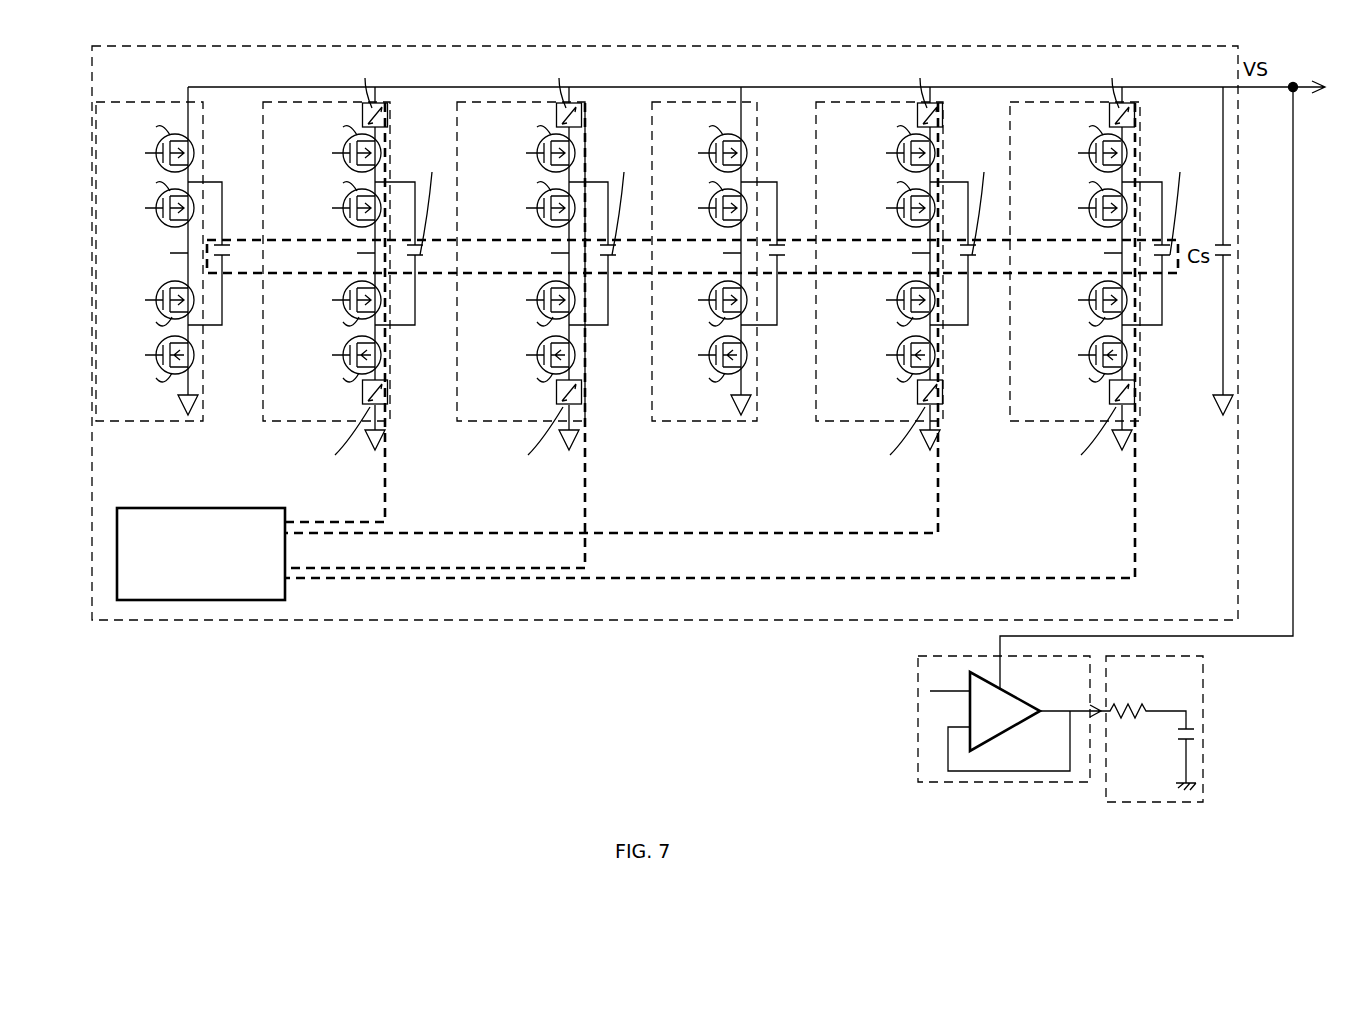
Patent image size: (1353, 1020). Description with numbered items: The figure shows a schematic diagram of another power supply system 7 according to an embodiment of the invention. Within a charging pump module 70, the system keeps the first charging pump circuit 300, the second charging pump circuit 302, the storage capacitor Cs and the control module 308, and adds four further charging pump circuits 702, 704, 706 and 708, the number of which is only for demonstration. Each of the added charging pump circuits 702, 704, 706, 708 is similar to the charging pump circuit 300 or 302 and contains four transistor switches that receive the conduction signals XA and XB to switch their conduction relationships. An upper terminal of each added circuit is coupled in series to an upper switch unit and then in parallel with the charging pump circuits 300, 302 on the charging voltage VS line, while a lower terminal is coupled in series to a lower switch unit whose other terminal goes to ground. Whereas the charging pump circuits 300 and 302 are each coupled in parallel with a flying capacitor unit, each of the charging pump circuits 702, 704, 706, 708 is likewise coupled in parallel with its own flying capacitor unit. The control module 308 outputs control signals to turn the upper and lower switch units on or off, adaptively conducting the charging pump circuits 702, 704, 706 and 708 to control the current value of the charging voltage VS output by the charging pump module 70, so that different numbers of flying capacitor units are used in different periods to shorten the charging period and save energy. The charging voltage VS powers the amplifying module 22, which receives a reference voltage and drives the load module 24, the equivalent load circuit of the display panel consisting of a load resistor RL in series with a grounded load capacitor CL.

The power supply system 7 is at (297, 658).
The charging pump module 70 is at (548, 620).
The first charging pump circuit 300 is at (205, 118).
The second charging pump circuit 302 is at (759, 118).
The charging pump circuit 702 is at (392, 118).
The charging pump circuit 704 is at (587, 118).
The charging pump circuit 706 is at (945, 118).
The charging pump circuit 708 is at (1142, 118).
The control module 308 is at (222, 506).
The amplifying module 22 is at (1012, 784).
The load module 24 is at (1205, 670).